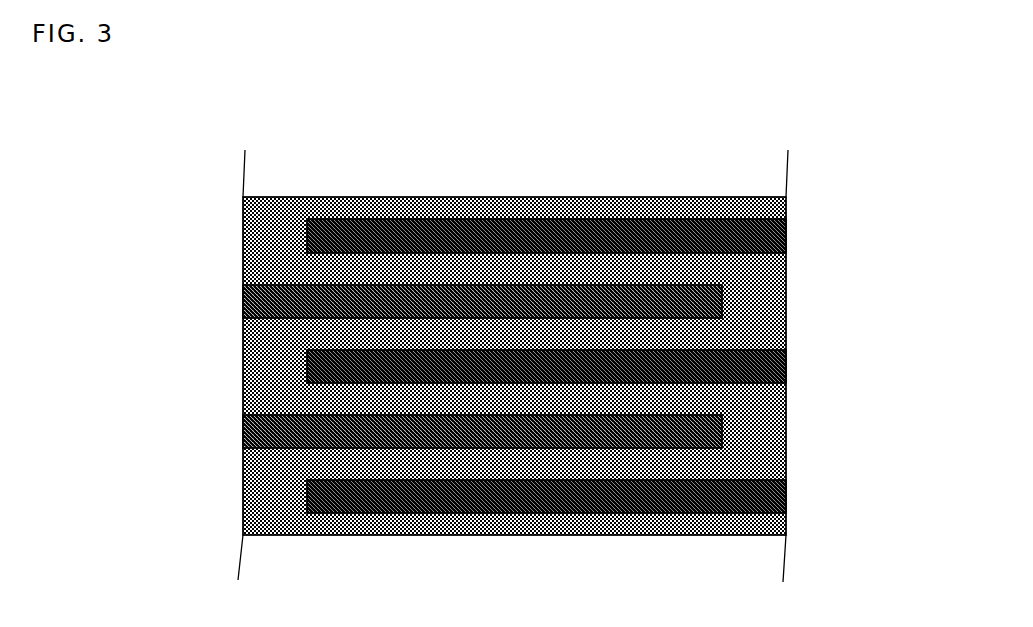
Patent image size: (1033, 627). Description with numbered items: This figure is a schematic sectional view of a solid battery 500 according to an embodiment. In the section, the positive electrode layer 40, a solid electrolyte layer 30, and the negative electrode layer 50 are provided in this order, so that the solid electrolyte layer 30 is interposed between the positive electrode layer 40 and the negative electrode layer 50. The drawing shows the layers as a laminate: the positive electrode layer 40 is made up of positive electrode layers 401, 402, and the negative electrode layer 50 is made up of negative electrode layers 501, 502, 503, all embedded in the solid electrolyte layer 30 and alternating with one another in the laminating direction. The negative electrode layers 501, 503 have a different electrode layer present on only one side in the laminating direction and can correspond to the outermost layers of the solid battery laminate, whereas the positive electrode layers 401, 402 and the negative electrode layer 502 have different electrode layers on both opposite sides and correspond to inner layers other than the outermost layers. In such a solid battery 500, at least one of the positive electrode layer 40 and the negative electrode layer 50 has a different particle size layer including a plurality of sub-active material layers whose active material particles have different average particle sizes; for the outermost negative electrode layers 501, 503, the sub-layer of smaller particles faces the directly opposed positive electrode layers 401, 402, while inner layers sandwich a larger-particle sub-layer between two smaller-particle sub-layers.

The solid battery 500 is at (518, 327).
The solid electrolyte layer 30 is at (770, 212).
The positive electrode layer 40 is at (406, 367).
The positive electrode layer 401 is at (247, 300).
The positive electrode layer 402 is at (442, 430).
The negative electrode layer 50 is at (626, 367).
The negative electrode layer 501 is at (760, 240).
The negative electrode layer 502 is at (767, 364).
The negative electrode layer 503 is at (767, 492).